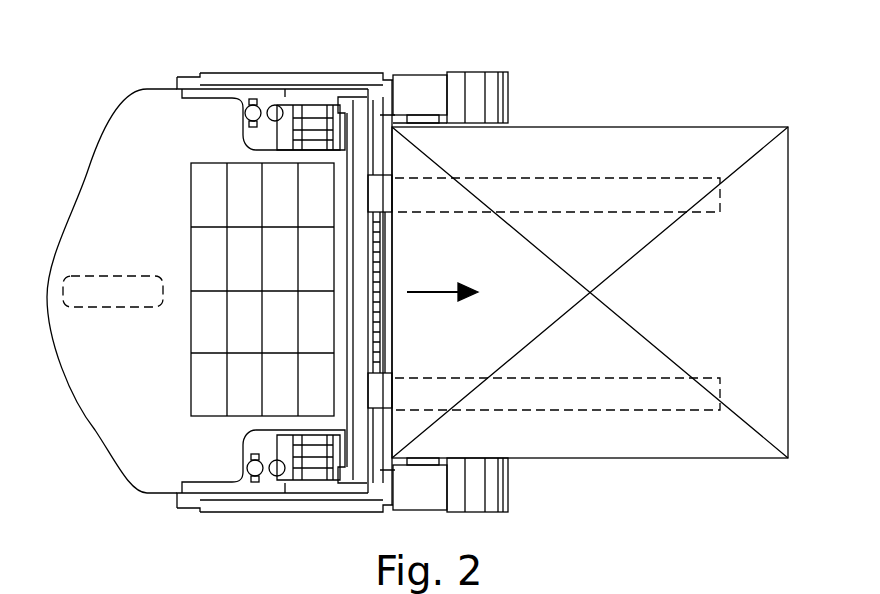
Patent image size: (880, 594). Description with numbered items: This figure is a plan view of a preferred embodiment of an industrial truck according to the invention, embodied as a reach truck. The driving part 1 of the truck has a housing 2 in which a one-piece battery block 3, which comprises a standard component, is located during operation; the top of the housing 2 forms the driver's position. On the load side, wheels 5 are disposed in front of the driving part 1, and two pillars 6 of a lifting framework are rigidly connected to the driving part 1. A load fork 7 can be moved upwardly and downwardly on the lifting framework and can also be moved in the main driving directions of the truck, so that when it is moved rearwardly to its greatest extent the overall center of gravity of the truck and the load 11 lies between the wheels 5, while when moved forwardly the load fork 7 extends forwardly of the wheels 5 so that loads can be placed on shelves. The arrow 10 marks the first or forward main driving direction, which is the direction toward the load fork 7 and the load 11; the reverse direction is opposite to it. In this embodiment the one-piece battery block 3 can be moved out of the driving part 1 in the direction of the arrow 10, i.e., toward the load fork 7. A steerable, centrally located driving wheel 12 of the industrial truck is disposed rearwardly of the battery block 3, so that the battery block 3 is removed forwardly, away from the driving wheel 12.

The driving part 1 is at (90, 132).
The housing 2 is at (170, 462).
The battery block 3 is at (205, 188).
The wheels 5 is at (422, 90).
The pillars 6 is at (345, 113).
The load fork 7 is at (585, 195).
The arrow 10 is at (432, 296).
The load 11 is at (700, 460).
The steerable centrally located driving wheel 12 is at (123, 290).